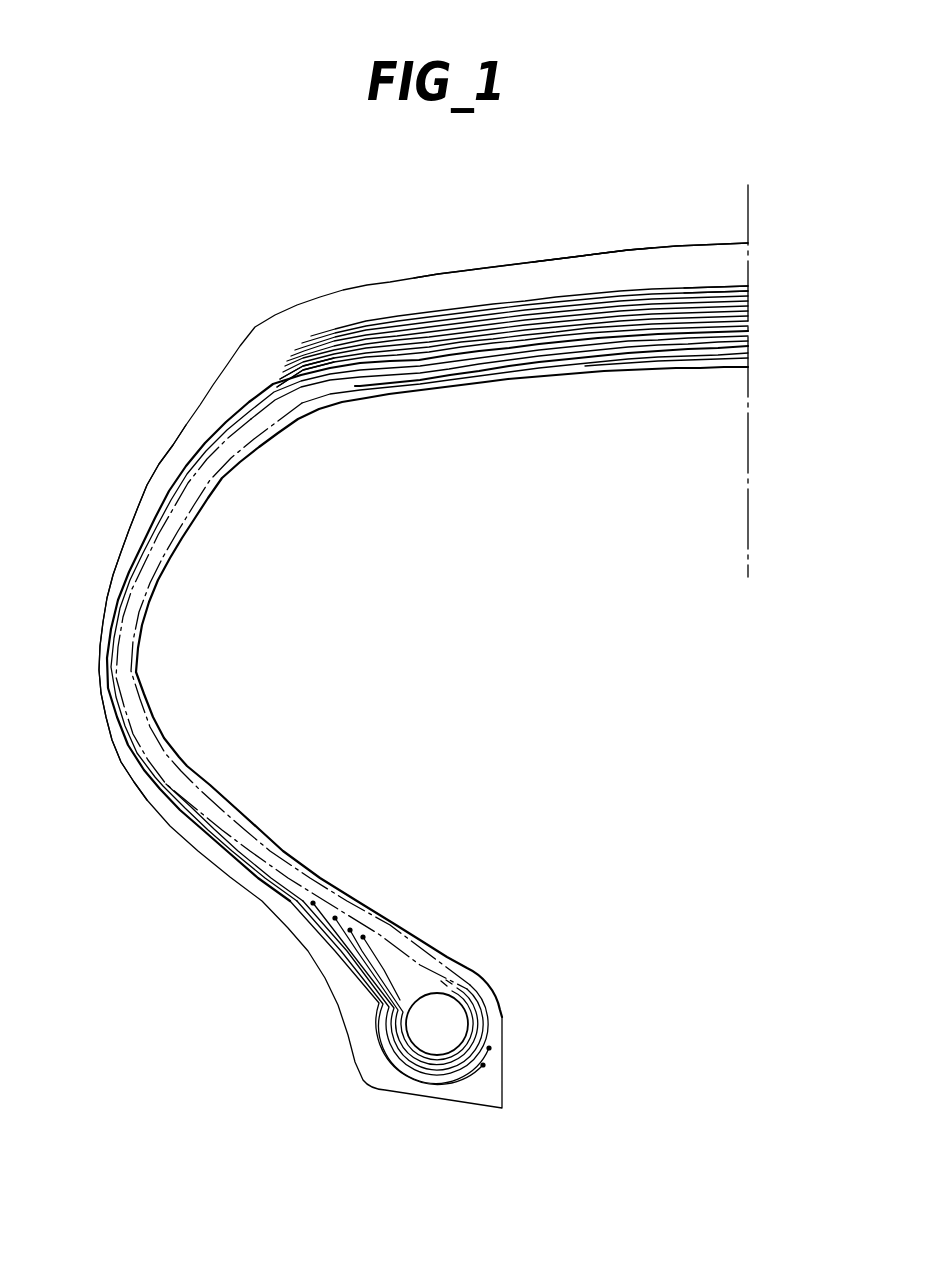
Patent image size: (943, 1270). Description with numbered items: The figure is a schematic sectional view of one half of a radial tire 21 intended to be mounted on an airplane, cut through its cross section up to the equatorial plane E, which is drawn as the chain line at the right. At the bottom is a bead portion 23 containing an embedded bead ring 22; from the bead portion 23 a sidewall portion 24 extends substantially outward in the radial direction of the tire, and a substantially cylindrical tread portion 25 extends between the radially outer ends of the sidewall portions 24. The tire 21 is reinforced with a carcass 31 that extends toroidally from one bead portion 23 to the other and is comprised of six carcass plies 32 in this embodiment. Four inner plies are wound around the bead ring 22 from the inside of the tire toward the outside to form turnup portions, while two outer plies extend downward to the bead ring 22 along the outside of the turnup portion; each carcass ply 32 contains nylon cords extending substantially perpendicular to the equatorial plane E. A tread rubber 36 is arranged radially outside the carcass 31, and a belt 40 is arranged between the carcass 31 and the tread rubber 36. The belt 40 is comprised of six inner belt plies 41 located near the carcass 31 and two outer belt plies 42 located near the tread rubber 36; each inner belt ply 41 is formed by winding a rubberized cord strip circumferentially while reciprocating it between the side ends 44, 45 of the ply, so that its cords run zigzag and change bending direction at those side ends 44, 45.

The radial tire 21 is at (183, 403).
The bead ring 22 is at (456, 1024).
The bead portion 23 is at (454, 945).
The sidewall portion 24 is at (99, 598).
The tread portion 25 is at (498, 260).
The carcass 31 is at (242, 475).
The carcass ply 32 is at (698, 340).
The tread rubber 36 is at (622, 258).
The belt 40 is at (375, 316).
The inner belt ply 41 is at (263, 357).
The outer belt ply 42 is at (717, 285).
The side end 44 is at (473, 313).
The side end 45 is at (279, 376).
The equatorial plane E is at (747, 528).